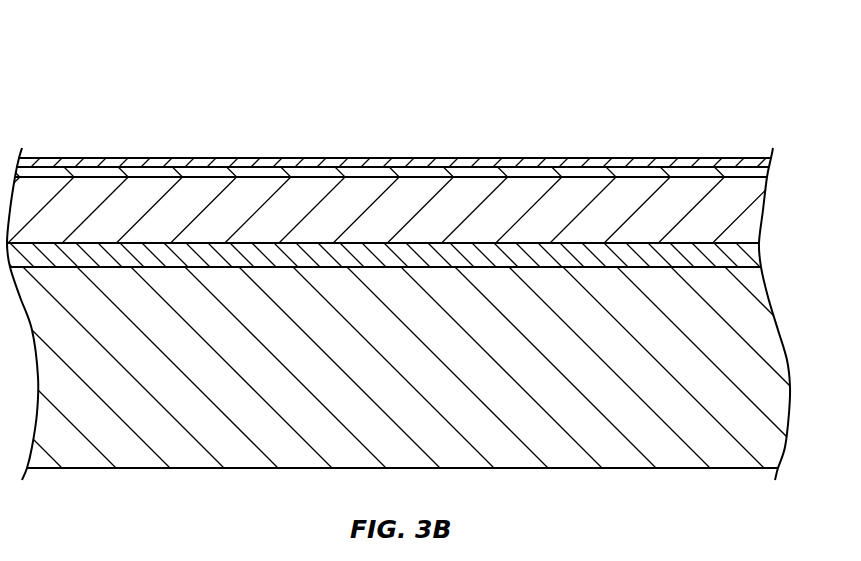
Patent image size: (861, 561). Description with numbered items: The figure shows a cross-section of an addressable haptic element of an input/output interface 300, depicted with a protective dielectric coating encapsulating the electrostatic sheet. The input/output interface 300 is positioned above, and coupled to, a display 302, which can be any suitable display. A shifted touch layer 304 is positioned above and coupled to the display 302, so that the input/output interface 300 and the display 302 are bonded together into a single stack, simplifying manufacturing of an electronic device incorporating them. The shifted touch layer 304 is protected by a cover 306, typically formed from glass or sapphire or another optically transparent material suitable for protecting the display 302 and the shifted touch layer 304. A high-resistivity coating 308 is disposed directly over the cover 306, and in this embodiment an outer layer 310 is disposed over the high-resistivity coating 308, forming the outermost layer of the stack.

The input/output interface 300 is at (100, 79).
The display 302 is at (791, 371).
The shifted touch layer 304 is at (761, 252).
The cover 306 is at (764, 202).
The high-resistivity coating 308 is at (768, 172).
The outer layer 310 is at (706, 157).